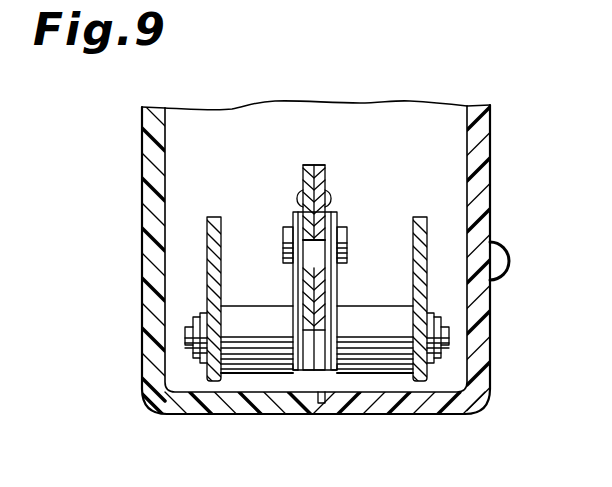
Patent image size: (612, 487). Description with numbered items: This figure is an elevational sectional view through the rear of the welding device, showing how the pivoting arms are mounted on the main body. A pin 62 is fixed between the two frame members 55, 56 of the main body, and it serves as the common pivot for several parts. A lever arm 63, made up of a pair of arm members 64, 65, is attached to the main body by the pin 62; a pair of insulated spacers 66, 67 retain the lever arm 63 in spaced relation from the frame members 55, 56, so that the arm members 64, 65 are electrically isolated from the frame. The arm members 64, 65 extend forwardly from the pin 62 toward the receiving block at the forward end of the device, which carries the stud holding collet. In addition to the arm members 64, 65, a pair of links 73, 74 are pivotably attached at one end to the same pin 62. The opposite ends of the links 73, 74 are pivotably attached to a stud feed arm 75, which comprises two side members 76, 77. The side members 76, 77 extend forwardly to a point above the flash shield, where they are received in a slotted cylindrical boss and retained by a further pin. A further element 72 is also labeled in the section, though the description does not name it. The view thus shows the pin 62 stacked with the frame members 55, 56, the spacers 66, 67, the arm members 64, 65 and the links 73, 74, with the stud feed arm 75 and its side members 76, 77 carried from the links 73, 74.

The frame member 55 is at (427, 232).
The frame member 56 is at (207, 235).
The pin 62 is at (452, 320).
The lever arm 63 is at (315, 266).
The arm member 64 is at (332, 371).
The arm member 65 is at (297, 371).
The insulated spacer 66 is at (358, 304).
The insulated spacer 67 is at (257, 306).
The housing 72 is at (340, 223).
The link 73 is at (385, 276).
The link 74 is at (283, 252).
The stud feed arm 75 is at (316, 163).
The side member 76 is at (325, 174).
The side member 77 is at (303, 176).